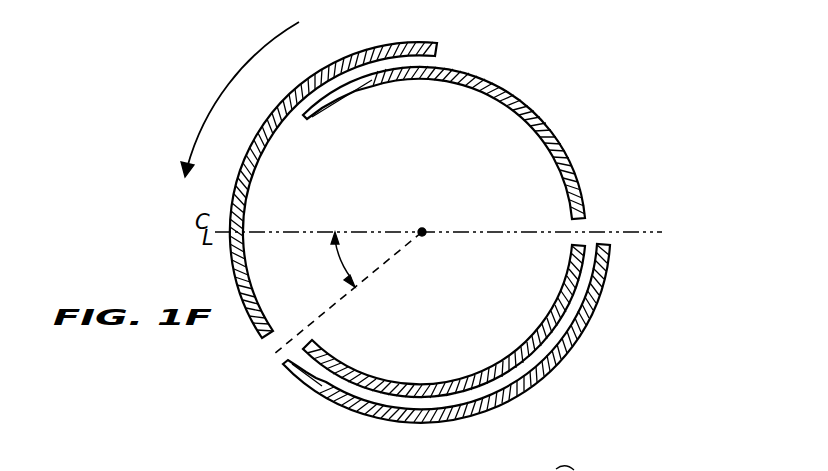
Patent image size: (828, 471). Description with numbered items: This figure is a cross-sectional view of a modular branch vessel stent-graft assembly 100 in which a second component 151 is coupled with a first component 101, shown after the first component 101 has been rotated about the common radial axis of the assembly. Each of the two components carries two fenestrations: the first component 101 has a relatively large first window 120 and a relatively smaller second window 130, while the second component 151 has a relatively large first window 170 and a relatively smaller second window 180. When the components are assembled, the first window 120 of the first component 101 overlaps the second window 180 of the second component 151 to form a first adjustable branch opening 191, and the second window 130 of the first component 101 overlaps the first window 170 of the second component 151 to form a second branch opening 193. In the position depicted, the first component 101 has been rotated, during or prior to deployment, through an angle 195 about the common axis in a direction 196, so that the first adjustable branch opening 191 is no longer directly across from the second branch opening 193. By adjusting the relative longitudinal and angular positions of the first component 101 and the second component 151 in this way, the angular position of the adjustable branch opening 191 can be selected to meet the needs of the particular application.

The modular branch vessel stent-graft assembly 100 is at (175, 138).
The first component 101 is at (595, 322).
The first window of the first component 120 is at (440, 52).
The second window of the first component 130 is at (272, 338).
The second component 151 is at (572, 152).
The first window of the second component 170 is at (305, 121).
The second window of the second component 180 is at (588, 220).
The first adjustable branch opening 191 is at (358, 315).
The second branch opening 193 is at (532, 250).
The angle 195 is at (336, 266).
The direction of rotation 196 is at (230, 88).